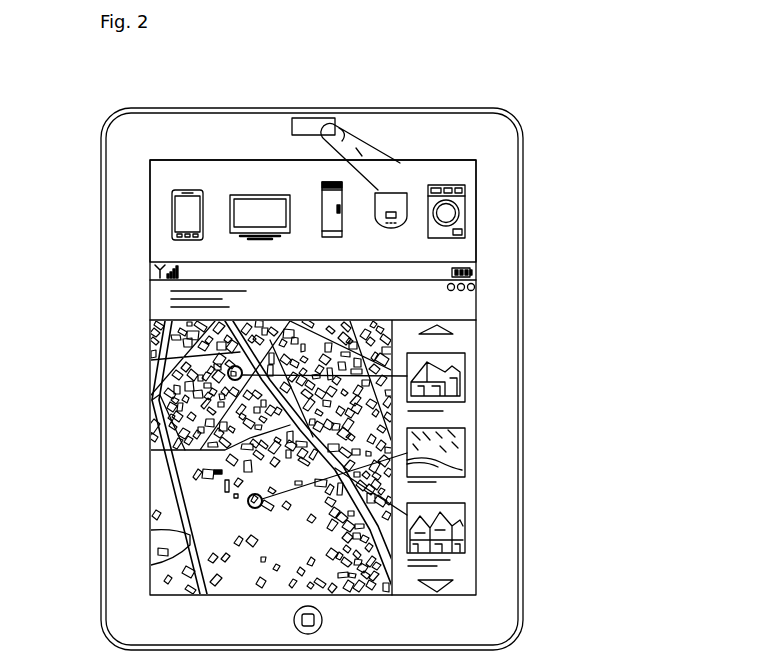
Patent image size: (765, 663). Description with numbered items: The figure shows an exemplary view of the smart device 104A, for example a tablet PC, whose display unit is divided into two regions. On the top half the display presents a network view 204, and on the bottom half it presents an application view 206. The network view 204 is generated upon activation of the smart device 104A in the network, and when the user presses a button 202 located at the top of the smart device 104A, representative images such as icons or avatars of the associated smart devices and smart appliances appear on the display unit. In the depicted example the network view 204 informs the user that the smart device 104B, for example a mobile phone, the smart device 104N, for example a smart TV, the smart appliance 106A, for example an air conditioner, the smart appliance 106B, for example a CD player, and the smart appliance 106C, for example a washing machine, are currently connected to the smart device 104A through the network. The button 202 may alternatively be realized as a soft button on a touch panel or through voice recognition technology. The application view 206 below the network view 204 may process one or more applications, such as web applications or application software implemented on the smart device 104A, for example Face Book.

The button 202 is at (308, 124).
The network view 204 is at (386, 211).
The application view 206 is at (480, 320).
The smart device 104A is at (505, 527).
The smart device 104B is at (188, 224).
The smart device 104N is at (260, 227).
The smart appliance 106A is at (332, 220).
The smart appliance 106B is at (392, 226).
The smart appliance 106C is at (446, 222).